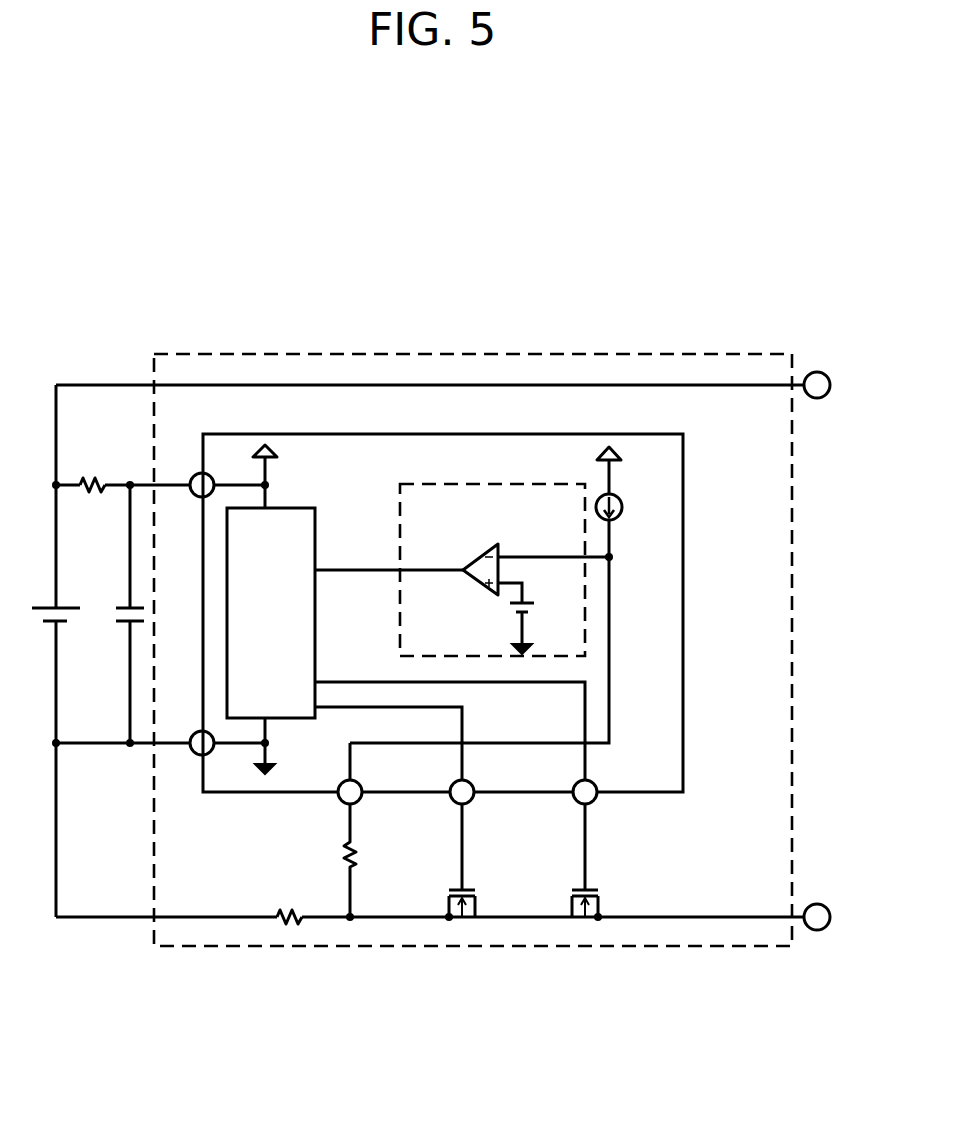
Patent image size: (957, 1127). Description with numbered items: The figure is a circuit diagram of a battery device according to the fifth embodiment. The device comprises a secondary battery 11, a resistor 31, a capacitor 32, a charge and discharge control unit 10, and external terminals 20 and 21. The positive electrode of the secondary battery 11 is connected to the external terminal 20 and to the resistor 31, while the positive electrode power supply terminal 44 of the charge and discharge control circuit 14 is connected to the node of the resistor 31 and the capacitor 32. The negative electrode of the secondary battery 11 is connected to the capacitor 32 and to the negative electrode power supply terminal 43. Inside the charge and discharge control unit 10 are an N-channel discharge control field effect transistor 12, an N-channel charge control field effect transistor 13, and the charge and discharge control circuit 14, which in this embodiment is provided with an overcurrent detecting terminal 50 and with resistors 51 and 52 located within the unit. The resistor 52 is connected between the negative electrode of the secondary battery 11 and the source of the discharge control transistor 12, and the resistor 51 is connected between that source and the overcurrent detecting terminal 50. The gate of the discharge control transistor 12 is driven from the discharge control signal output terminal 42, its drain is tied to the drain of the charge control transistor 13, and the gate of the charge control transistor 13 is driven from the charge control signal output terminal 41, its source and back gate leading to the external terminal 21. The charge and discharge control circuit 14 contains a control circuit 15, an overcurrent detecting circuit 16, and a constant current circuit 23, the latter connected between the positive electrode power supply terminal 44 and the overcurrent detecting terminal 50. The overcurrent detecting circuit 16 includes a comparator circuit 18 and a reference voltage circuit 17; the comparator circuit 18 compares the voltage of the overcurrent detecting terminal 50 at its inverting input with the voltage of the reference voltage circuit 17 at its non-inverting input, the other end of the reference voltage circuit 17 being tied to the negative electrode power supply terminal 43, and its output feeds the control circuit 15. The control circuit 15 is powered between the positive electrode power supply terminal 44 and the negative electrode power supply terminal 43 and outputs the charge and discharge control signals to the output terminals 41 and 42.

The charge and discharge control unit 10 is at (793, 523).
The secondary battery 11 is at (72, 604).
The N-channel discharge control field effect transistor 12 is at (462, 922).
The N-channel charge control field effect transistor 13 is at (585, 922).
The charge and discharge control circuit 14 is at (686, 480).
The control circuit 15 is at (290, 508).
The overcurrent detecting circuit 16 is at (400, 546).
The reference voltage circuit 17 is at (512, 610).
The comparator circuit 18 is at (470, 557).
The external terminal 20 is at (824, 373).
The external terminal 21 is at (824, 904).
The constant current circuit 23 is at (620, 519).
The resistor 31 is at (90, 477).
The capacitor 32 is at (124, 620).
The charge control signal output terminal 41 is at (574, 807).
The discharge control signal output terminal 42 is at (460, 806).
The negative electrode power supply terminal 43 is at (192, 758).
The positive electrode power supply terminal 44 is at (198, 472).
The overcurrent detecting terminal 50 is at (338, 806).
The resistor 51 is at (360, 858).
The resistor 52 is at (288, 906).